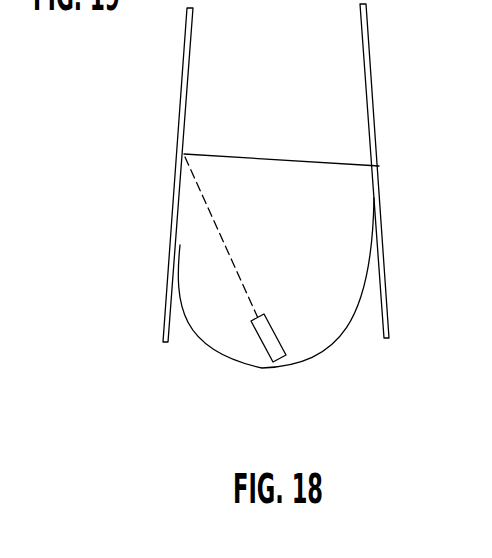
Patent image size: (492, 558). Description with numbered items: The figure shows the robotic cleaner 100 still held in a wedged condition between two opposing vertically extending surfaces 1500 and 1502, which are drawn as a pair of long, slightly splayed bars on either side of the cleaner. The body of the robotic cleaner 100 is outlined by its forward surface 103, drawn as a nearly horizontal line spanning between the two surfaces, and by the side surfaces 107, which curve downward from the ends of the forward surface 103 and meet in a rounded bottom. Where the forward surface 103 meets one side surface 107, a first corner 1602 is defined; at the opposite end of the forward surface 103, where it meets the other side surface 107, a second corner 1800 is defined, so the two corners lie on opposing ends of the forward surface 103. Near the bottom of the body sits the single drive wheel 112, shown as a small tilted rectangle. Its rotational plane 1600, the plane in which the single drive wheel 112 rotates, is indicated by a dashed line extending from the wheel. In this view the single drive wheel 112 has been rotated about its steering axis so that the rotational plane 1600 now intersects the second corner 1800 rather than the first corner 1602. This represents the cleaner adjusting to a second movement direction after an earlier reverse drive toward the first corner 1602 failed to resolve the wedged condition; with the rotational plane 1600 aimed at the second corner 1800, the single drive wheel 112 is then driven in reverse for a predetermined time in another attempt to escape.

The robotic cleaner 100 is at (181, 386).
The forward surface 103 is at (291, 156).
The side surface 107 is at (170, 198).
The single drive wheel 112 is at (267, 342).
The vertically extending surface 1500 is at (185, 97).
The vertically extending surface 1502 is at (375, 113).
The rotational plane 1600 is at (213, 218).
The first corner 1602 is at (379, 165).
The second corner 1800 is at (183, 152).